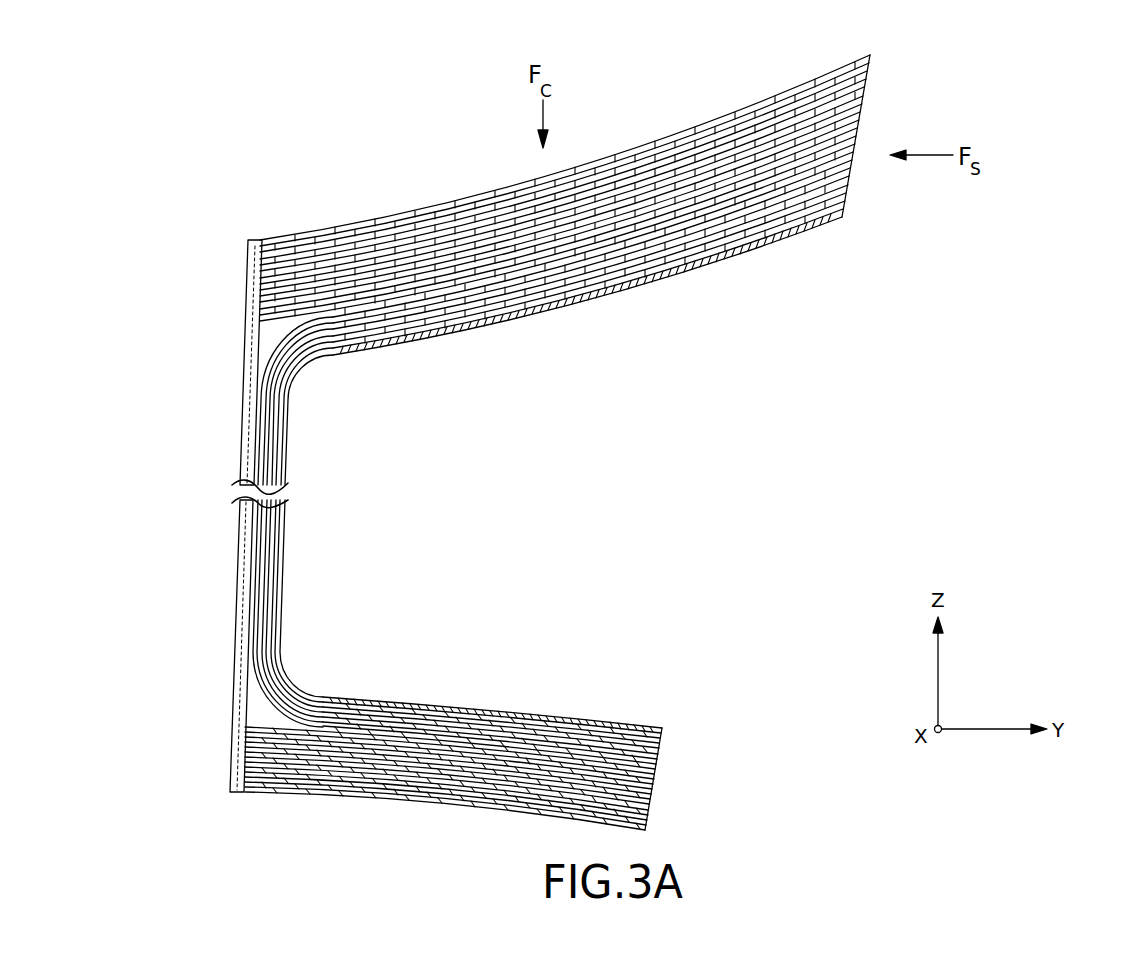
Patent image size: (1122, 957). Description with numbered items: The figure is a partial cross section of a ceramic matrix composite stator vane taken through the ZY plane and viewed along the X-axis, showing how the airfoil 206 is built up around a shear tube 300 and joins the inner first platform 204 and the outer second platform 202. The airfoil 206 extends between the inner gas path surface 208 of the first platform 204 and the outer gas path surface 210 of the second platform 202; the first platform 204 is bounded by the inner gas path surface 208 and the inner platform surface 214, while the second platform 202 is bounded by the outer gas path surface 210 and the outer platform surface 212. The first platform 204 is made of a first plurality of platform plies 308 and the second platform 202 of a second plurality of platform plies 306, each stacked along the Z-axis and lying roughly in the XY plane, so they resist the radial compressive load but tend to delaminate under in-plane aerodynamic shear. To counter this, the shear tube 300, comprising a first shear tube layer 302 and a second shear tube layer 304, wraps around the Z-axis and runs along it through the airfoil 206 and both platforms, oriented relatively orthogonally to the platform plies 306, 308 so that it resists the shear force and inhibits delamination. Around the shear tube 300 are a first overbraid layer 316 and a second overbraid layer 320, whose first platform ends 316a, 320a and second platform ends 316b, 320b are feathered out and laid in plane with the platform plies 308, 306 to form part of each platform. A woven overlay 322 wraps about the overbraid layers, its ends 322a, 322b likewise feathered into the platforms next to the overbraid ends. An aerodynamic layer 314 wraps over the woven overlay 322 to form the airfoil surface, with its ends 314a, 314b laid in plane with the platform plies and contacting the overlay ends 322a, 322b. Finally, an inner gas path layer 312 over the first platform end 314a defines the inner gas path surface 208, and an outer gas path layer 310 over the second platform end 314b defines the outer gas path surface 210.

The second platform 202 is at (884, 58).
The first platform 204 is at (710, 828).
The airfoil 206 is at (362, 503).
The inner gas path surface 208 is at (468, 701).
The outer gas path surface 210 is at (699, 270).
The outer platform surface 212 is at (667, 133).
The inner platform surface 214 is at (480, 803).
The shear tube 300 is at (232, 236).
The first shear tube layer 302 is at (250, 292).
The second shear tube layer 304 is at (250, 320).
The second plurality of platform plies 306 is at (855, 101).
The first plurality of platform plies 308 is at (653, 788).
The outer gas path layer 310 is at (843, 218).
The inner gas path layer 312 is at (597, 719).
The aerodynamic layer 314 is at (270, 570).
The first platform end of aerodynamic layer 314a is at (660, 732).
The second platform end of aerodynamic layer 314b is at (486, 320).
The first overbraid layer 316 is at (250, 616).
The first platform end of first overbraid layer 316a is at (328, 722).
The second platform end of first overbraid layer 316b is at (620, 262).
The second overbraid layer 320 is at (252, 642).
The first platform end of second overbraid layer 320a is at (383, 704).
The second platform end of second overbraid layer 320b is at (650, 262).
The woven overlay 322 is at (268, 428).
The first platform end of woven overlay 322a is at (490, 720).
The second platform end of woven overlay 322b is at (570, 290).